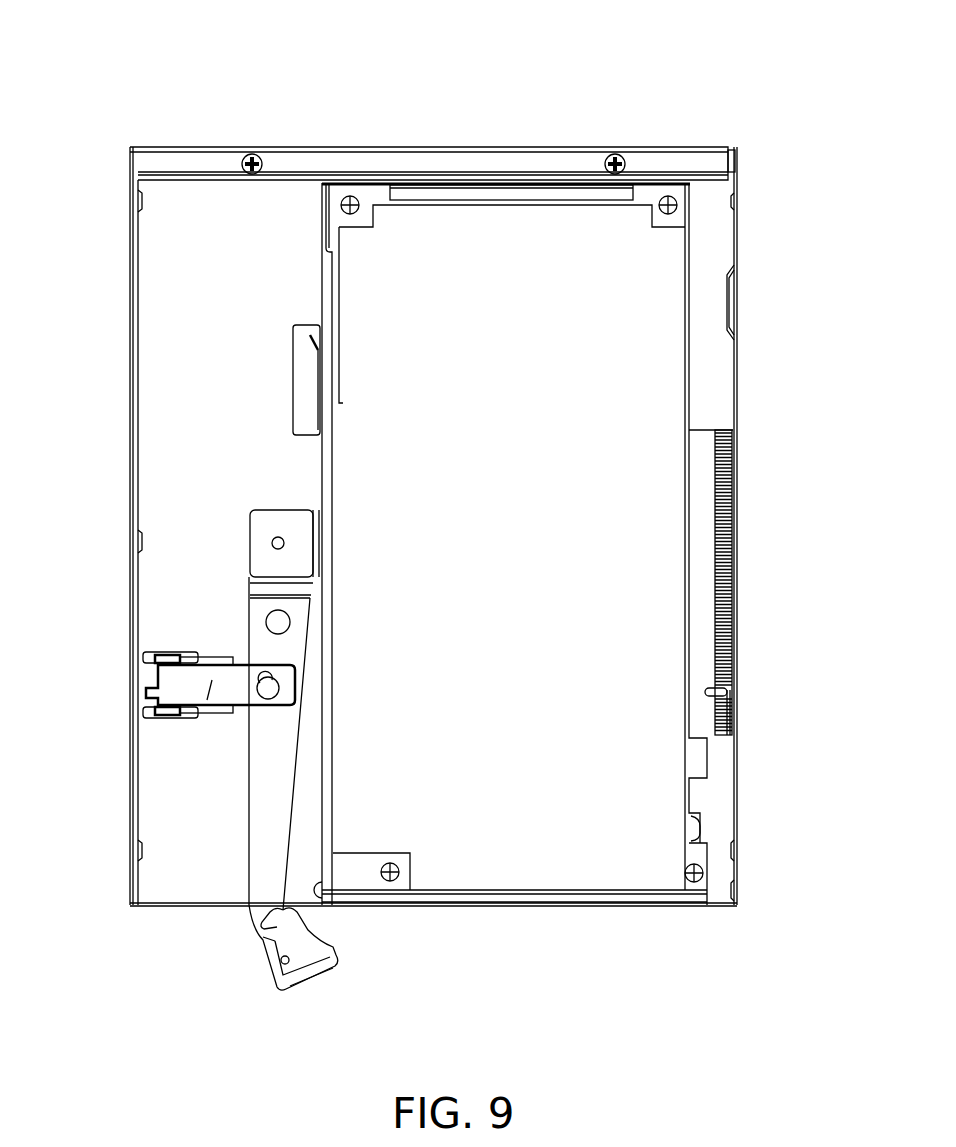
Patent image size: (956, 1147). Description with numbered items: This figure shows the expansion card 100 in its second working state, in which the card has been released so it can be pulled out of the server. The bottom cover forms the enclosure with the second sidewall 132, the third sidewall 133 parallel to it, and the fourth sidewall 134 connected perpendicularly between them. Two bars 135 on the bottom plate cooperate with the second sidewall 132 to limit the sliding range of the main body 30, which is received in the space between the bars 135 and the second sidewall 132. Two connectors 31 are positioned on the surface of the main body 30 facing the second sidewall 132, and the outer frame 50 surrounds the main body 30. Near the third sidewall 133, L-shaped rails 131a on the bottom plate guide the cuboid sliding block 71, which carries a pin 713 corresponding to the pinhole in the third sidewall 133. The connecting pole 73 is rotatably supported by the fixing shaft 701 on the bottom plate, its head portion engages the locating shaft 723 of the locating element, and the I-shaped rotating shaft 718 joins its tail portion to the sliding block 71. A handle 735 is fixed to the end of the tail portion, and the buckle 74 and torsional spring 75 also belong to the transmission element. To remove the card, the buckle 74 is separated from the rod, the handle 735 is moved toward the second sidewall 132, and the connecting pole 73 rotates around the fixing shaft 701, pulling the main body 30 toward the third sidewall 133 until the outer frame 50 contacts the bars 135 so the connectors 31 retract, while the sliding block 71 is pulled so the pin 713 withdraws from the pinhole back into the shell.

The expansion card 100 is at (340, 53).
The fourth sidewall 134 is at (508, 147).
The third sidewall 133 is at (131, 436).
The second sidewall 132 is at (738, 806).
The bar 135 is at (317, 378).
The rail 131a is at (200, 657).
The main body 30 is at (617, 295).
The connector 31 is at (722, 465).
The outer frame 50 is at (378, 875).
The sliding block 71 is at (212, 680).
The pin 713 is at (150, 698).
The rotating shaft 718 is at (276, 618).
The fixing shaft 701 is at (265, 685).
The locating shaft 723 is at (278, 535).
The connecting pole 73 is at (265, 880).
The buckle 74 is at (315, 953).
The torsional spring 75 is at (282, 960).
The handle 735 is at (322, 980).